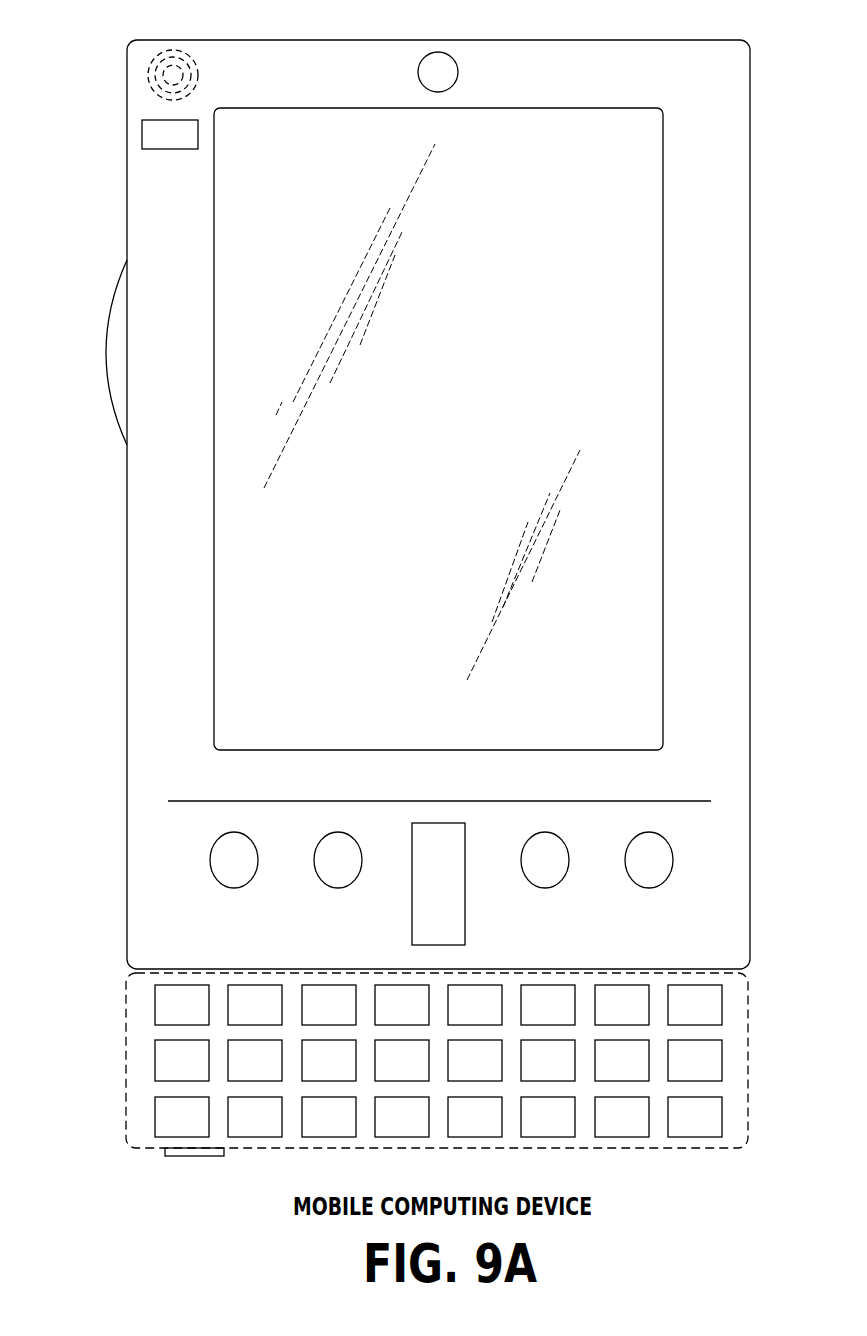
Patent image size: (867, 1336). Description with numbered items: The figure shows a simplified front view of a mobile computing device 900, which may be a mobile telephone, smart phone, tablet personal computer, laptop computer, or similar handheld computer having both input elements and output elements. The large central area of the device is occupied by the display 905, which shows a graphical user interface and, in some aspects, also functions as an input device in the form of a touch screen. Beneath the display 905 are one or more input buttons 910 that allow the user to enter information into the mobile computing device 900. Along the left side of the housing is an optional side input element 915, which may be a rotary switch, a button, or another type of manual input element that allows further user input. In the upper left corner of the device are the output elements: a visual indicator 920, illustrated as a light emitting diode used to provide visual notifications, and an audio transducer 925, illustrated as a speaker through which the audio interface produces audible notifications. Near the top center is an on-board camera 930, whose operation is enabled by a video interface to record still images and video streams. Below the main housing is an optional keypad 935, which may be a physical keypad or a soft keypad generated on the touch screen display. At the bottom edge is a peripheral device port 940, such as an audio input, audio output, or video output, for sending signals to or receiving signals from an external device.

The mobile computing device 900 is at (717, 40).
The display 905 is at (235, 593).
The input buttons 910 is at (234, 888).
The side input element 915 is at (106, 353).
The visual indicator 920 is at (142, 133).
The audio transducer 925 is at (143, 78).
The on-board camera 930 is at (441, 52).
The keypad 935 is at (136, 1060).
The peripheral device port 940 is at (172, 1157).